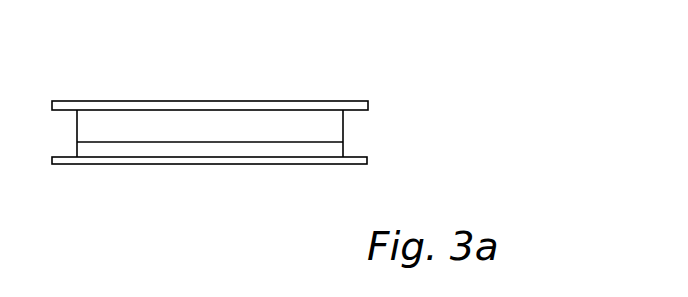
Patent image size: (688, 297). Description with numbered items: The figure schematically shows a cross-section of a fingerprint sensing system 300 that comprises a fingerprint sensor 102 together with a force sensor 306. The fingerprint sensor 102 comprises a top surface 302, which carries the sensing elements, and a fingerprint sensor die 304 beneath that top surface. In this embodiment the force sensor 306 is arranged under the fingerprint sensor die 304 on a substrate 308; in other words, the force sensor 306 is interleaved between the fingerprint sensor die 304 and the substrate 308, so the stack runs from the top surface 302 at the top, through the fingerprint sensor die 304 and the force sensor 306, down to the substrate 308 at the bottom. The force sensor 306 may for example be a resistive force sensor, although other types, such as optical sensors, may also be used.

The fingerprint sensing system 300 is at (317, 130).
The fingerprint sensor 102 is at (268, 130).
The top surface 302 is at (313, 100).
The fingerprint sensor die 304 is at (340, 122).
The force sensor 306 is at (313, 150).
The substrate 308 is at (367, 160).